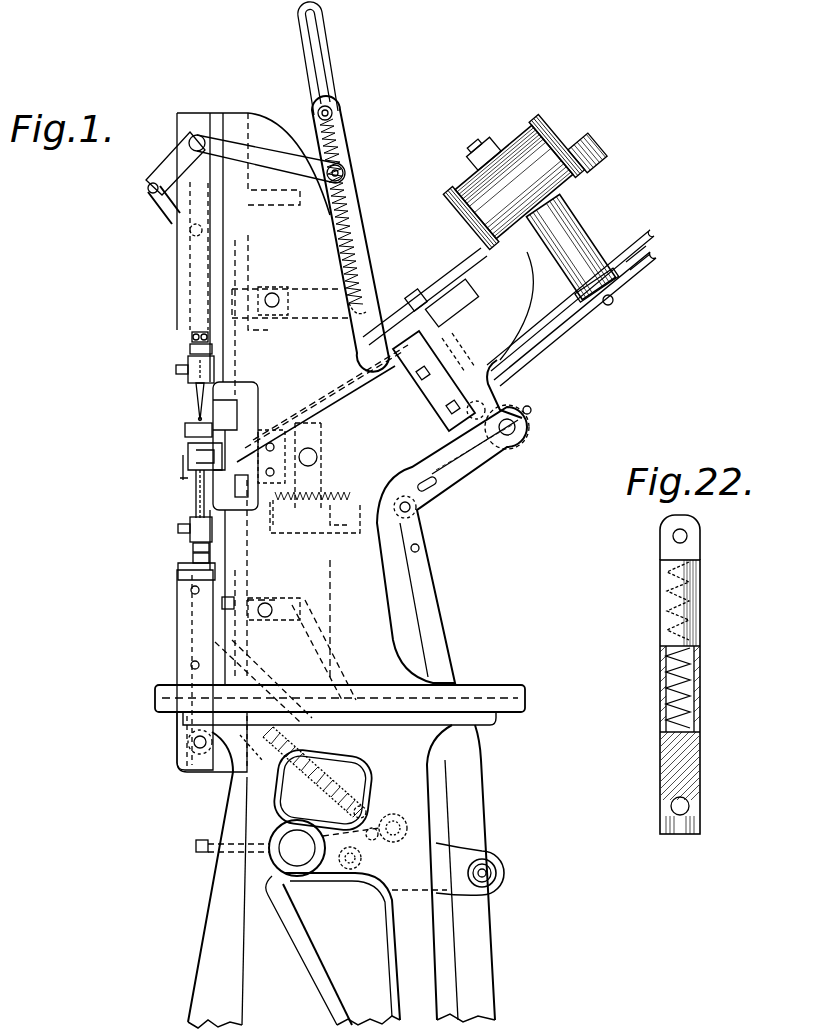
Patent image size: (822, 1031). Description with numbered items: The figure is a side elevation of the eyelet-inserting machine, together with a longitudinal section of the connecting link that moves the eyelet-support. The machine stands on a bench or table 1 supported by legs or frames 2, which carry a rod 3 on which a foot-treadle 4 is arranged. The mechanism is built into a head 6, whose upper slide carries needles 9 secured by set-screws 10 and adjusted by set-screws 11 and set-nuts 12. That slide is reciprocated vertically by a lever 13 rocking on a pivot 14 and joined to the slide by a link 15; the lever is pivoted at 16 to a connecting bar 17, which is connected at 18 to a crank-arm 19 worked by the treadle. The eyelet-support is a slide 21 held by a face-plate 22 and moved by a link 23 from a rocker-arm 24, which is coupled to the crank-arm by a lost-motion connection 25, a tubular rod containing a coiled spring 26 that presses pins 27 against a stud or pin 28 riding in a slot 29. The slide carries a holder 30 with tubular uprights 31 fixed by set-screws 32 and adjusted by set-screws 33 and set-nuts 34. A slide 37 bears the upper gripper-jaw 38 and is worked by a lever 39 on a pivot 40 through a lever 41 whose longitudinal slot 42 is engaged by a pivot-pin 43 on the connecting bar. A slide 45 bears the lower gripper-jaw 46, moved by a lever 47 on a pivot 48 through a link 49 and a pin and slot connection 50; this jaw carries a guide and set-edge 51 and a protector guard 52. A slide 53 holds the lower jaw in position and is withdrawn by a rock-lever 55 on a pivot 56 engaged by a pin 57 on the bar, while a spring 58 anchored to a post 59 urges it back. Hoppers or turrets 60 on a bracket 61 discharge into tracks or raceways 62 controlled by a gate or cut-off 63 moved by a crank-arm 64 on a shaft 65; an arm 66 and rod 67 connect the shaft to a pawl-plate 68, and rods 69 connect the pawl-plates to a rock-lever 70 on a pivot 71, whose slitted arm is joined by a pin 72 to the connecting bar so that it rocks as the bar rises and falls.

In FIG. 1, the bench or table 1 is at (492, 690).
In FIG. 1, the legs or frames 2 is at (457, 947).
In FIG. 1, the rod 3 is at (290, 853).
In FIG. 1, the foot-treadle 4 is at (356, 949).
In FIG. 1, the head 6 is at (295, 620).
In FIG. 1, the needles 9 is at (196, 395).
In FIG. 1, the set-screws 10 is at (176, 370).
In FIG. 1, the set-screws 11 is at (192, 336).
In FIG. 1, the set-nuts 12 is at (190, 349).
In FIG. 1, the lever 13 is at (170, 160).
In FIG. 1, the pivot 14 is at (197, 135).
In FIG. 1, the link 15 is at (160, 214).
In FIG. 1, the pivot 16 is at (344, 171).
In FIG. 1, the connecting bar 17 is at (362, 222).
In FIG. 1, the connection 18 is at (496, 874).
In FIG. 1, the crank-arm 19 is at (453, 852).
In FIG. 1, the slide 21 is at (178, 572).
In FIG. 1, the face-plate 22 is at (177, 607).
In FIG. 1, the link 23 is at (236, 668).
In FIG. 1, the rocker-arm 24 is at (222, 778).
In FIG. 1, the lost-motion connection 25 is at (292, 785).
In FIG. 22, the lost-motion connection 25 is at (660, 612).
In FIG. 1, the coiled spring 26 is at (282, 762).
In FIG. 22, the coiled spring 26 is at (667, 684).
In FIG. 1, the pin or pins 27 is at (362, 806).
In FIG. 22, the pin or pins 27 is at (662, 745).
In FIG. 1, the stud or pin 28 is at (395, 814).
In FIG. 22, the stud or pin 28 is at (674, 832).
In FIG. 1, the slot 29 is at (373, 840).
In FIG. 22, the slot 29 is at (690, 834).
In FIG. 1, the holder 30 is at (190, 530).
In FIG. 1, the tubular uprights 31 is at (196, 496).
In FIG. 1, the set-screws 32 is at (178, 526).
In FIG. 1, the set-screws 33 is at (193, 557).
In FIG. 1, the set-nuts 34 is at (193, 546).
In FIG. 1, the slide 37 is at (256, 398).
In FIG. 1, the gripper-jaw 38 is at (196, 418).
In FIG. 1, the lever 39 is at (323, 318).
In FIG. 1, the pivot 40 is at (275, 293).
In FIG. 1, the lever 41 is at (330, 66).
In FIG. 1, the longitudinal slot 42 is at (318, 38).
In FIG. 1, the pivot-pin 43 is at (333, 112).
In FIG. 1, the slide 45 is at (196, 506).
In FIG. 1, the gripper-jaw 46 is at (190, 450).
In FIG. 1, the lever 47 is at (250, 605).
In FIG. 1, the pivot 48 is at (272, 604).
In FIG. 1, the link 49 is at (320, 660).
In FIG. 1, the pin and slot connection 50 is at (342, 862).
In FIG. 1, the guide and set-edge 51 is at (183, 466).
In FIG. 1, the protector guard 52 is at (185, 428).
In FIG. 1, the slide 53 is at (330, 515).
In FIG. 1, the rock-lever 55 is at (345, 436).
In FIG. 1, the pivot 56 is at (308, 448).
In FIG. 1, the pin 57 is at (421, 550).
In FIG. 1, the spring 58 is at (323, 494).
In FIG. 1, the post 59 is at (274, 505).
In FIG. 1, the hoppers or turrets 60 is at (472, 190).
In FIG. 1, the bracket 61 is at (522, 280).
In FIG. 1, the tracks or raceways 62 is at (436, 290).
In FIG. 1, the gate or cut-off 63 is at (409, 297).
In FIG. 1, the crank-arm 64 is at (440, 315).
In FIG. 1, the shaft 65 is at (472, 360).
In FIG. 1, the arm 66 is at (500, 378).
In FIG. 1, the rod 67 is at (545, 318).
In FIG. 1, the pawl-plate 68 is at (652, 246).
In FIG. 1, the rods 69 is at (567, 332).
In FIG. 1, the rock-lever 70 is at (478, 440).
In FIG. 1, the pivot 71 is at (517, 432).
In FIG. 1, the pin 72 is at (412, 512).